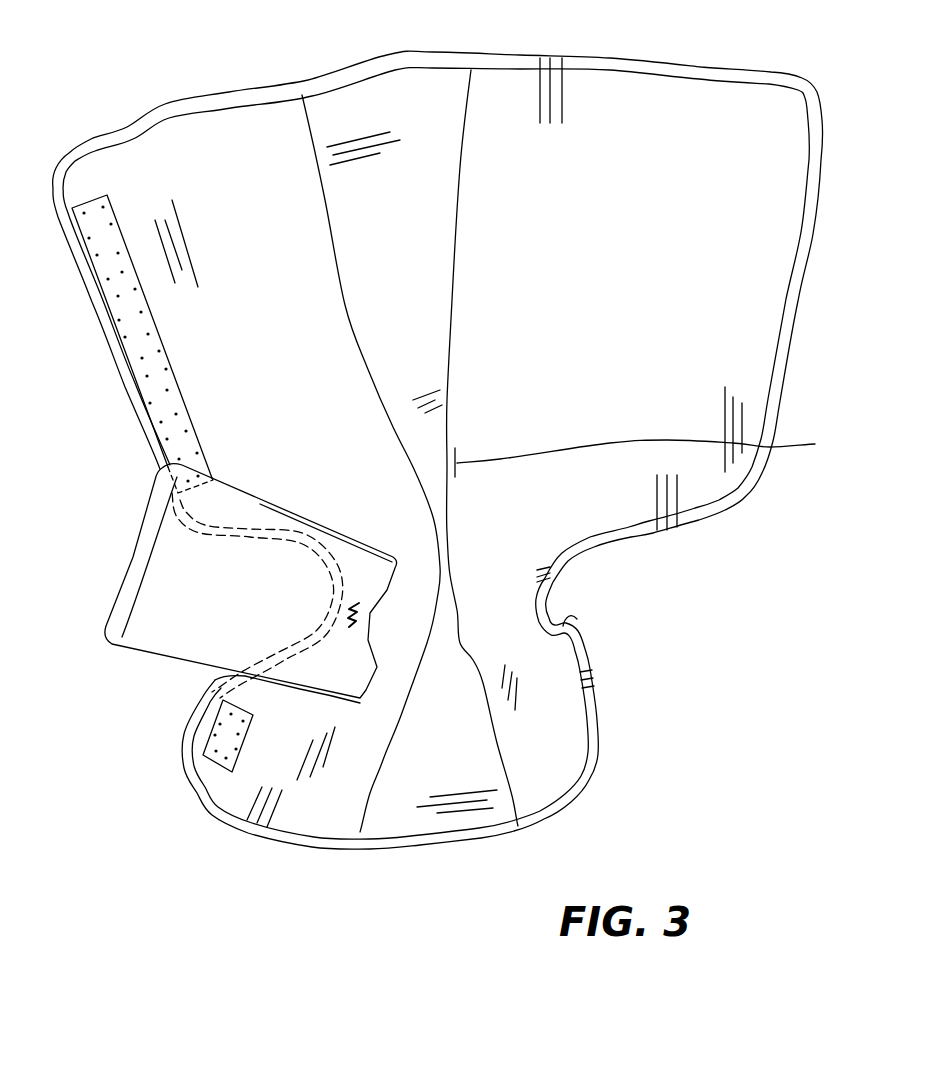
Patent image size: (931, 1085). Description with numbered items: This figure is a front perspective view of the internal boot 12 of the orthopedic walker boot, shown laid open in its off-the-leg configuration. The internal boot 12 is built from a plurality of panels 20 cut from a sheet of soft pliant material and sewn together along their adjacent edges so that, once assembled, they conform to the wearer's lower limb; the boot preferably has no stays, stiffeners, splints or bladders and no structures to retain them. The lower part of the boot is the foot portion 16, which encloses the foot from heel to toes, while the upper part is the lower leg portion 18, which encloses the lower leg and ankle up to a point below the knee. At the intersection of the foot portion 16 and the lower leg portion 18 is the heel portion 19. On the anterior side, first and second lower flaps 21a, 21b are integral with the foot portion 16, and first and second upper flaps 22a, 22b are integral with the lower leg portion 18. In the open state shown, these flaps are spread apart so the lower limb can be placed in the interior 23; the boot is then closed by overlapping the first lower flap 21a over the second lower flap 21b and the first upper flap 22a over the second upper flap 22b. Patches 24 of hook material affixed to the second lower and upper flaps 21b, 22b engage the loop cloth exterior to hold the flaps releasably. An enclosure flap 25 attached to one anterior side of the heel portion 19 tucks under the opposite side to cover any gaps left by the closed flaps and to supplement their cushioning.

The internal boot 12 is at (62, 433).
The foot portion 16 is at (400, 780).
The lower leg portion 18 is at (565, 263).
The heel portion 19 is at (457, 603).
The panels 20 is at (173, 177).
The first lower flap 21a is at (592, 697).
The second lower flap 21b is at (187, 760).
The first upper flap 22a is at (752, 325).
The second upper flap 22b is at (88, 297).
The interior 23 is at (649, 449).
The patches 24 is at (92, 195).
The enclosure flap 25 is at (157, 570).